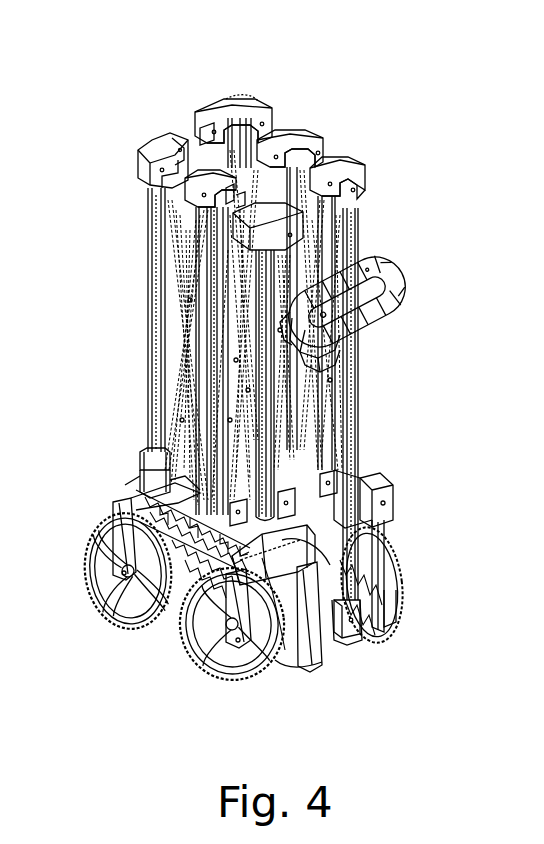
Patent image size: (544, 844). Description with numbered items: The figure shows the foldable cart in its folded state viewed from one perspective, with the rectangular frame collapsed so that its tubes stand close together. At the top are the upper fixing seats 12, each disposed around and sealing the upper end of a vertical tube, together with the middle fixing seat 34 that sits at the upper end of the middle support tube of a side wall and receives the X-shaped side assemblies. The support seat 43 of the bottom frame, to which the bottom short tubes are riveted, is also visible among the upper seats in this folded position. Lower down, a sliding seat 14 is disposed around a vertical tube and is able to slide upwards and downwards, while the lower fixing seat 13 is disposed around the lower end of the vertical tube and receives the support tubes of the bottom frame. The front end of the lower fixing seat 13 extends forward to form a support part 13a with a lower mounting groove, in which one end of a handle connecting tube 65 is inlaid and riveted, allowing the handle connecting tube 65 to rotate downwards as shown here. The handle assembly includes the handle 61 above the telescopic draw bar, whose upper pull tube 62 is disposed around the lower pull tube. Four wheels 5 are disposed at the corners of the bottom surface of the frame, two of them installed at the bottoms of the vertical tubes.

The upper fixing seat 12 is at (235, 100).
The support seat 43 is at (240, 187).
The middle fixing seat 34 is at (297, 137).
The sliding seat 14 is at (145, 455).
The lower fixing seat 13 is at (145, 478).
The wheel 5 is at (88, 532).
The upper pull tube 62 is at (351, 458).
The support part 13a is at (385, 486).
The handle 61 is at (355, 588).
The handle connecting tube 65 is at (385, 584).